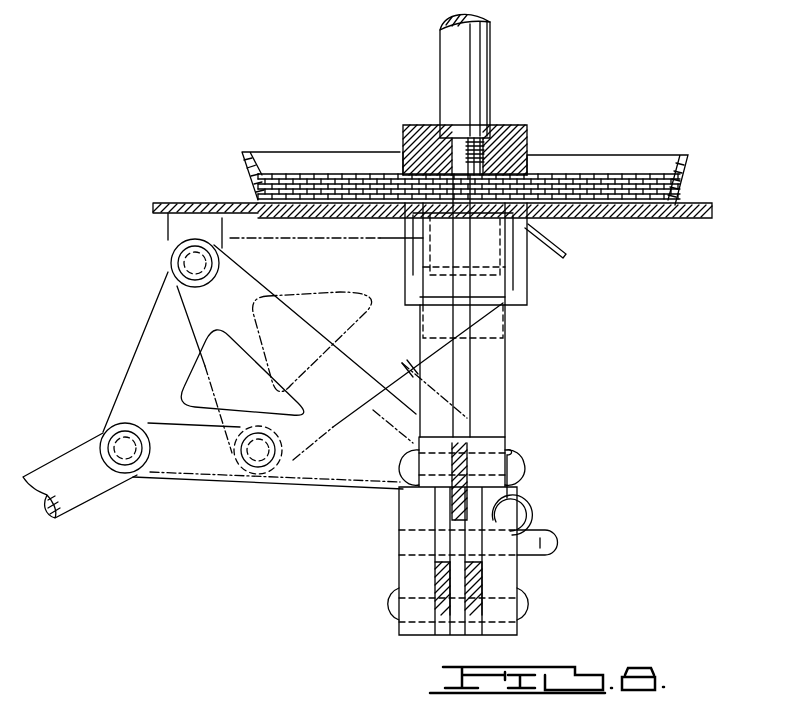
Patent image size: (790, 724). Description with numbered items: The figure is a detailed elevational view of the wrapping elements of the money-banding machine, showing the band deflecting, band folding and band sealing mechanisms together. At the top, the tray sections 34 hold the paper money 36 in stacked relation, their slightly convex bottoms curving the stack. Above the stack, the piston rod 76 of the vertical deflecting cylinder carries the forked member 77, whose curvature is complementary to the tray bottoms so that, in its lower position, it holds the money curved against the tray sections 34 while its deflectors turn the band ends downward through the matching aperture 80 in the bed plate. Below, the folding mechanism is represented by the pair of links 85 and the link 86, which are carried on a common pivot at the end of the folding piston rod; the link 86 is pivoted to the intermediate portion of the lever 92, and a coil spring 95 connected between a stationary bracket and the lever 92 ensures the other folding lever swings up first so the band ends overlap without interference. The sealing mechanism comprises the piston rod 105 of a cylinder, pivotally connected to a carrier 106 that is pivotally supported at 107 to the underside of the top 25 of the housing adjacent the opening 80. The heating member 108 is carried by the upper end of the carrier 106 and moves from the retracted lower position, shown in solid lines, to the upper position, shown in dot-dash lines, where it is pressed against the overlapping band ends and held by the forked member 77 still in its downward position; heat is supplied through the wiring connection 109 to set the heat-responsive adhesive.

The top 25 is at (185, 200).
The tray sections 34 is at (353, 163).
The paper money 36 is at (522, 178).
The piston rod 76 is at (480, 81).
The forked member 77 is at (513, 133).
The aperture 80 is at (670, 220).
The links 85 is at (442, 577).
The link 86 is at (452, 497).
The lever 92 is at (497, 415).
The coil spring 95 is at (527, 510).
The piston rod 105 is at (70, 493).
The carrier 106 is at (347, 477).
The pivot 107 is at (190, 260).
The heating member 108 is at (403, 368).
The wiring connection 109 is at (553, 243).